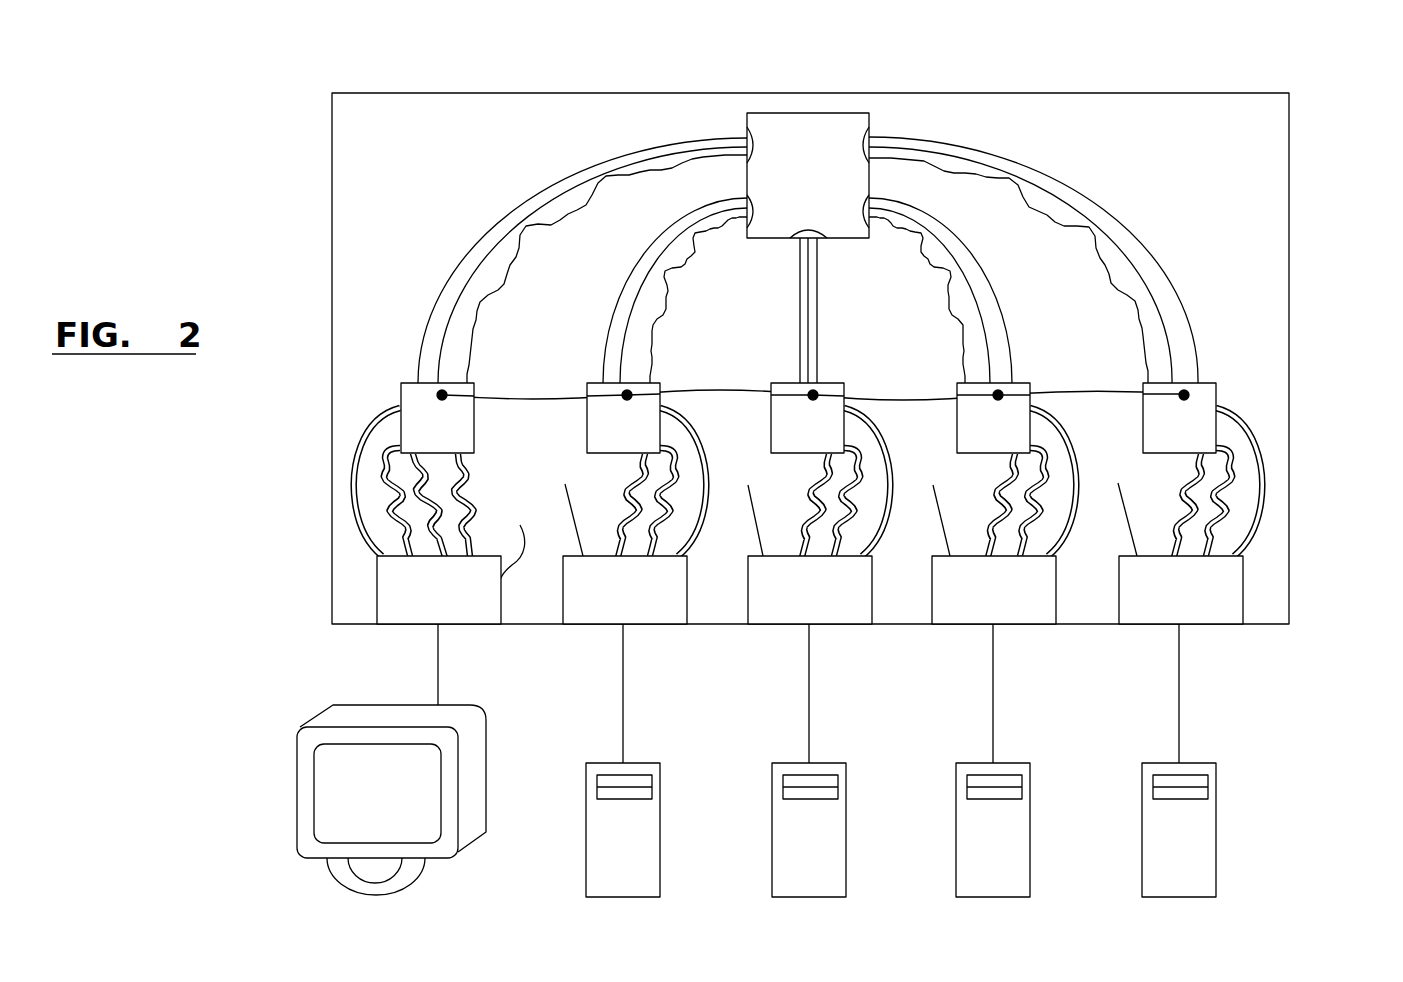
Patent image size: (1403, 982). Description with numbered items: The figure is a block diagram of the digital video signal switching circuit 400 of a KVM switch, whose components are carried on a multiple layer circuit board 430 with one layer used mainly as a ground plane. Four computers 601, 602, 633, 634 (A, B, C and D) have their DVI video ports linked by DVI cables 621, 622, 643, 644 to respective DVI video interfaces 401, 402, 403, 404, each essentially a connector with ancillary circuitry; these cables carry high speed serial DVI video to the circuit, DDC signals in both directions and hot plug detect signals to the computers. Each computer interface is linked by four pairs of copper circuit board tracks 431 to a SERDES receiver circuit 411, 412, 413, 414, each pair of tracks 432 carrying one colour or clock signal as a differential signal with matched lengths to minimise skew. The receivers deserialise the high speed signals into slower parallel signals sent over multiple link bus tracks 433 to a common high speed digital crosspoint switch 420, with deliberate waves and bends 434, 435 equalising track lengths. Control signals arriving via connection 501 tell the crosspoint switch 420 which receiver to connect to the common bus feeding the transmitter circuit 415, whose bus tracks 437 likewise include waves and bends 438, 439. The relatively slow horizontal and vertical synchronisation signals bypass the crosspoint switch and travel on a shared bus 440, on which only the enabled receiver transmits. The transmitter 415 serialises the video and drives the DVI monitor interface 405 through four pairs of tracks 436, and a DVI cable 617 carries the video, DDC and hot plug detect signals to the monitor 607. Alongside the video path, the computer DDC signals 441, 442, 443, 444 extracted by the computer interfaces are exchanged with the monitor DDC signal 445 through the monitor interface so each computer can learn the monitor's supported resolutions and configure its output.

The digital video signal switching circuit 400 is at (1289, 258).
The DVI video interface 401 is at (1156, 606).
The DVI video interface 402 is at (969, 606).
The DVI video interface 403 is at (785, 606).
The DVI video interface 404 is at (600, 606).
The DVI monitor interface 405 is at (414, 606).
The SERDES receiver circuit 411 is at (1156, 439).
The SERDES receiver circuit 412 is at (970, 439).
The SERDES receiver circuit 413 is at (784, 439).
The SERDES receiver circuit 414 is at (600, 439).
The transmitter circuit 415 is at (414, 439).
The digital crosspoint switch 420 is at (787, 190).
The multiple layer circuit board 430 is at (1137, 225).
The copper circuit board tracks 431 is at (948, 507).
The pair of circuit board tracks 432 is at (1040, 437).
The copper circuit board tracks 433 is at (948, 357).
The waves and bends 434 is at (937, 314).
The waves and bends 435 is at (973, 303).
The copper circuit board tracks 436 is at (362, 523).
The copper circuit board tracks 437 is at (526, 307).
The waves and bends 438 is at (578, 205).
The waves and bends 439 is at (580, 262).
The shared bus 440 is at (732, 392).
The computer DDC signal 441 is at (1125, 525).
The computer DDC signal 442 is at (950, 530).
The computer DDC signal 443 is at (752, 520).
The computer DDC signal 444 is at (567, 486).
The monitor DDC signal 445 is at (526, 567).
The control signal connection 501 is at (805, 113).
The computer 601 is at (1217, 836).
The computer 602 is at (1031, 836).
The monitor 607 is at (330, 800).
The DVI cable 617 is at (440, 663).
The DVI cable 621 is at (1179, 698).
The DVI cable 622 is at (993, 698).
The computer 633 is at (847, 836).
The computer 634 is at (661, 836).
The DVI cable 643 is at (809, 698).
The DVI cable 644 is at (623, 698).